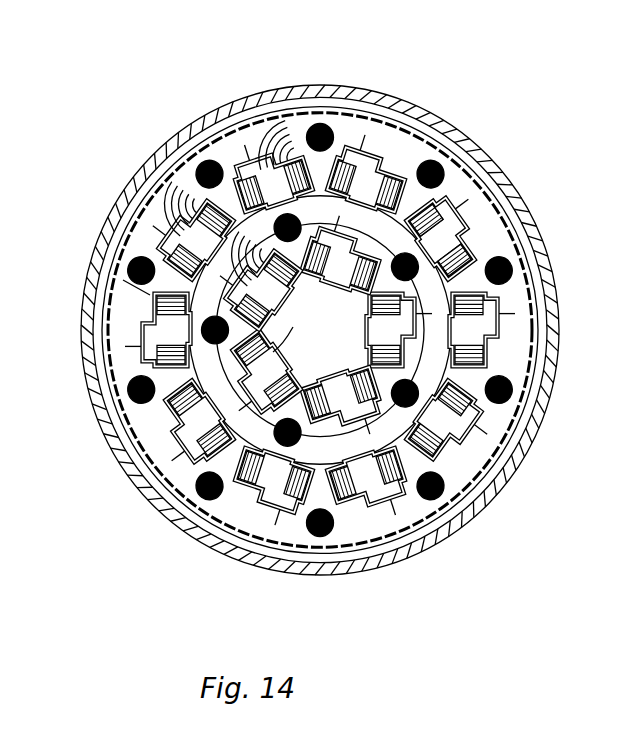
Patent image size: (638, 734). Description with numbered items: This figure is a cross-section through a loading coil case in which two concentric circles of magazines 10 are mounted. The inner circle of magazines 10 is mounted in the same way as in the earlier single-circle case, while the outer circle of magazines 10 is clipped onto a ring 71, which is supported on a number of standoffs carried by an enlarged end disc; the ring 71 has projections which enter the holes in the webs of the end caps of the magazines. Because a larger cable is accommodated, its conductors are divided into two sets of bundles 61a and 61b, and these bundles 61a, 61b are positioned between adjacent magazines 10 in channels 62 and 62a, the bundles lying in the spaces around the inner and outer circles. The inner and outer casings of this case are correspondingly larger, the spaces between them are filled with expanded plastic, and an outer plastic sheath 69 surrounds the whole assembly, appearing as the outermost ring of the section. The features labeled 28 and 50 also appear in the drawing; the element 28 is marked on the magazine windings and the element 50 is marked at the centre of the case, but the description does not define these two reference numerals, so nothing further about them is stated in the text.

The magazine 10 is at (453, 193).
The coil winding 28 is at (473, 250).
The central axis 50 is at (333, 355).
The bundle of conductors 61a is at (410, 396).
The bundle of conductors 61b is at (429, 170).
The channel 62 is at (200, 315).
The channel 62a is at (147, 252).
The outer plastic sheath 69 is at (190, 128).
The ring 71 is at (522, 353).